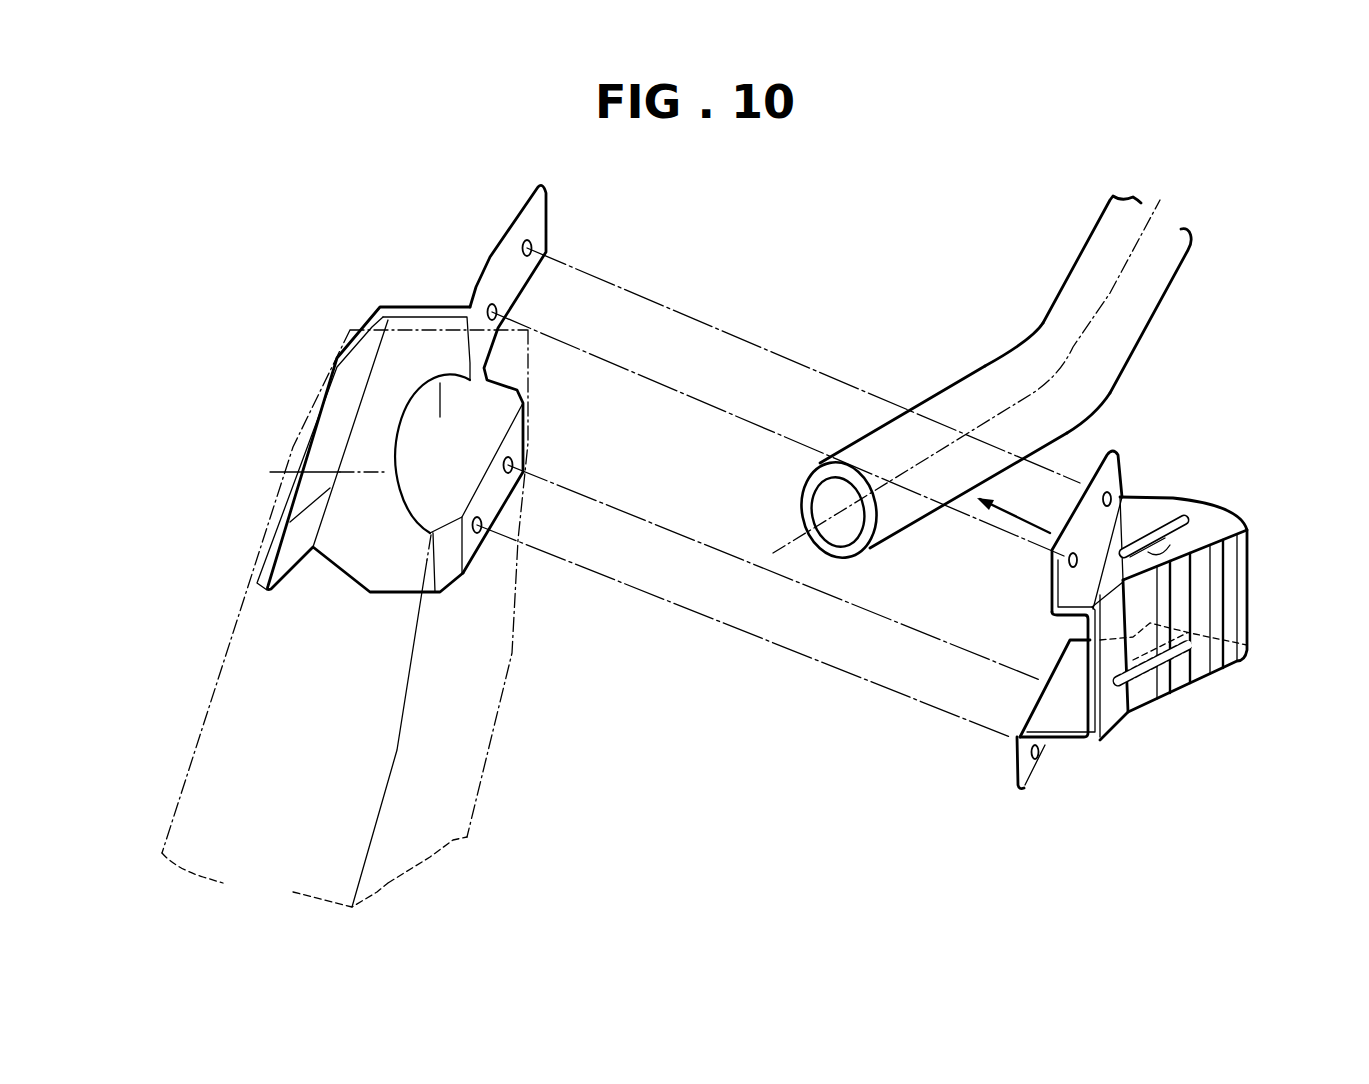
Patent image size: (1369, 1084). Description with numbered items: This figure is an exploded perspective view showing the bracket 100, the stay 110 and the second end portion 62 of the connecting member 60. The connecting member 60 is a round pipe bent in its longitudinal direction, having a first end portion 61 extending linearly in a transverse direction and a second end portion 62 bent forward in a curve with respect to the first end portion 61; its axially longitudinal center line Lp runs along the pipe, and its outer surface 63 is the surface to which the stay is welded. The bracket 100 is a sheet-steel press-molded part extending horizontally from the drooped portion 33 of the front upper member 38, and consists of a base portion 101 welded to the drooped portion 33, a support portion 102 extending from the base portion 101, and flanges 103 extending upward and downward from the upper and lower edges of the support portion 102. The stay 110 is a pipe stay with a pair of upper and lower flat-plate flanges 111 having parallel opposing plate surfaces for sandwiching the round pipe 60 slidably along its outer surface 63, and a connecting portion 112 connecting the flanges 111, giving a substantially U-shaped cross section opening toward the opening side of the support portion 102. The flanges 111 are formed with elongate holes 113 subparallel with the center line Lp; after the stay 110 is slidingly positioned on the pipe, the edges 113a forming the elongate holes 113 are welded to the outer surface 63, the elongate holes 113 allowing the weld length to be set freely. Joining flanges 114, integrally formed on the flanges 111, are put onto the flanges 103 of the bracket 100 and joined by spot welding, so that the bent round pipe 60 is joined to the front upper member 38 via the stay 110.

The drooped portion 33 is at (288, 618).
The front upper member 38 is at (207, 733).
The connecting member 60 is at (1045, 364).
The first end portion 61 is at (1063, 283).
The second end portion 62 is at (970, 370).
The outer surface 63 is at (962, 403).
The bracket 100 is at (257, 587).
The base portion 101 is at (300, 537).
The support portion 102 is at (363, 437).
The flanges 103 is at (517, 222).
The stay 110 is at (1137, 619).
The flanges 111 is at (1207, 520).
The connecting portion 112 is at (1230, 573).
The elongate holes 113 is at (1183, 513).
The edges 113a is at (1160, 527).
The joining flanges 114 is at (1117, 473).
The axially longitudinal center line Lp is at (792, 542).